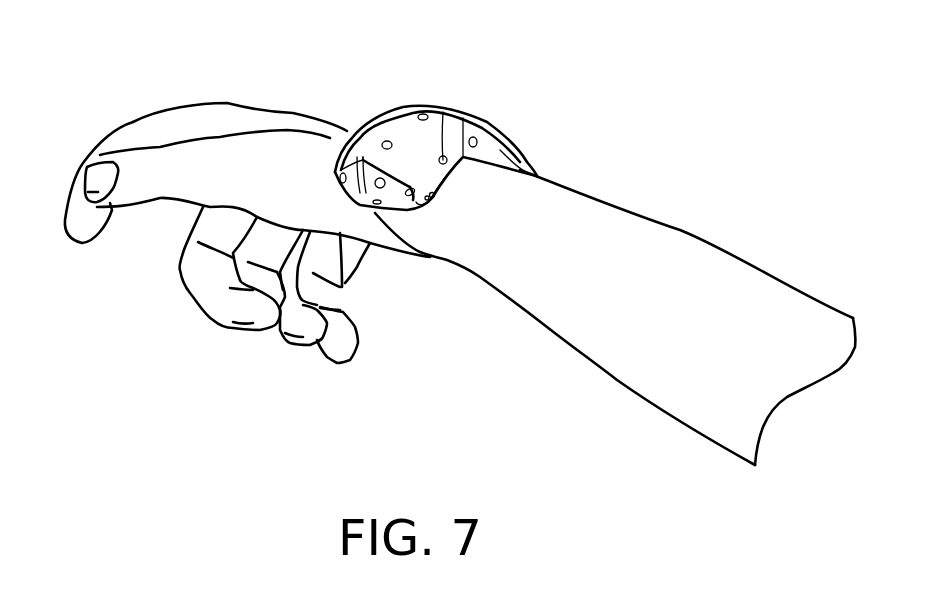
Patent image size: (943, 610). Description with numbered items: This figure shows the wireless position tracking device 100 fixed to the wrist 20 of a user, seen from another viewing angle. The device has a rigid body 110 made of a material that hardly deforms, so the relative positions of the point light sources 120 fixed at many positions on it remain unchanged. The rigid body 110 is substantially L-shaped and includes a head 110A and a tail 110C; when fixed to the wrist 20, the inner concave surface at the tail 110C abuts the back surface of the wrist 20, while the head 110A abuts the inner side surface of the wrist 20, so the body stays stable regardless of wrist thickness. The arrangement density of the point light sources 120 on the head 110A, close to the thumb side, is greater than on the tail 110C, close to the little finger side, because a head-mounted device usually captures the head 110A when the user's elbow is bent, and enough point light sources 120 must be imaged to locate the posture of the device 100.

The wireless position tracking device 100 is at (452, 119).
The rigid body 110 is at (452, 119).
The head 110A is at (372, 113).
The tail 110C is at (527, 160).
The point light sources 120 is at (443, 155).
The wrist 20 is at (442, 225).